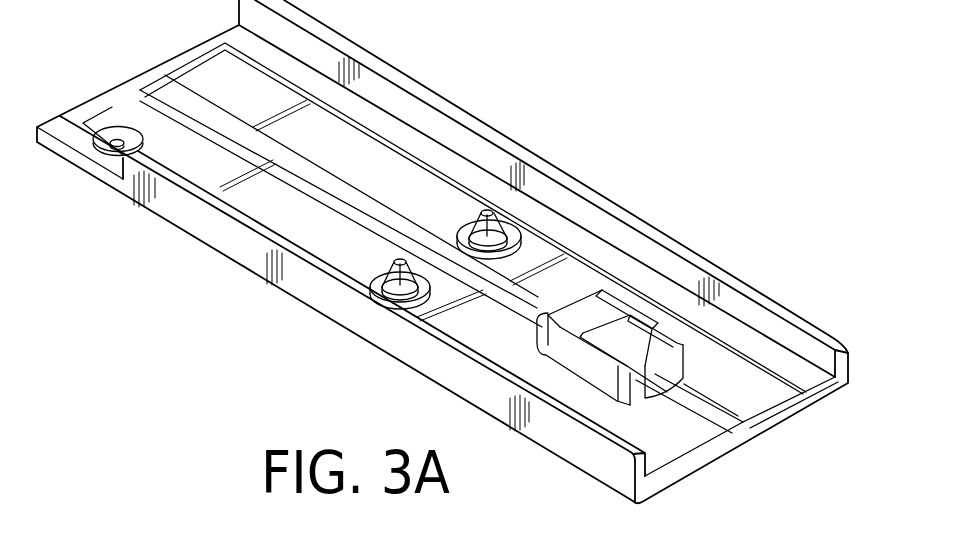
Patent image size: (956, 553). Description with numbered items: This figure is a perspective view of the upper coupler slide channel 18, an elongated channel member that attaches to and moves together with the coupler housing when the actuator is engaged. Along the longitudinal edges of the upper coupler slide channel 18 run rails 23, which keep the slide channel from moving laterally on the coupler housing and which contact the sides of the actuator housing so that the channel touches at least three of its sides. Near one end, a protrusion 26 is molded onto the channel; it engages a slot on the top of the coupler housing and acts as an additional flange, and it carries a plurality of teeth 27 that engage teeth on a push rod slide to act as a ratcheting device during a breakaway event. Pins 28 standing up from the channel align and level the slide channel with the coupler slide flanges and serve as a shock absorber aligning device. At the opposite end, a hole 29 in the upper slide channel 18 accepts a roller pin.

The upper coupler slide channel 18 is at (427, 73).
The rails 23 is at (547, 170).
The protrusion 26 is at (587, 363).
The teeth 27 is at (606, 289).
The pins 28 is at (485, 211).
The hole 29 is at (117, 140).